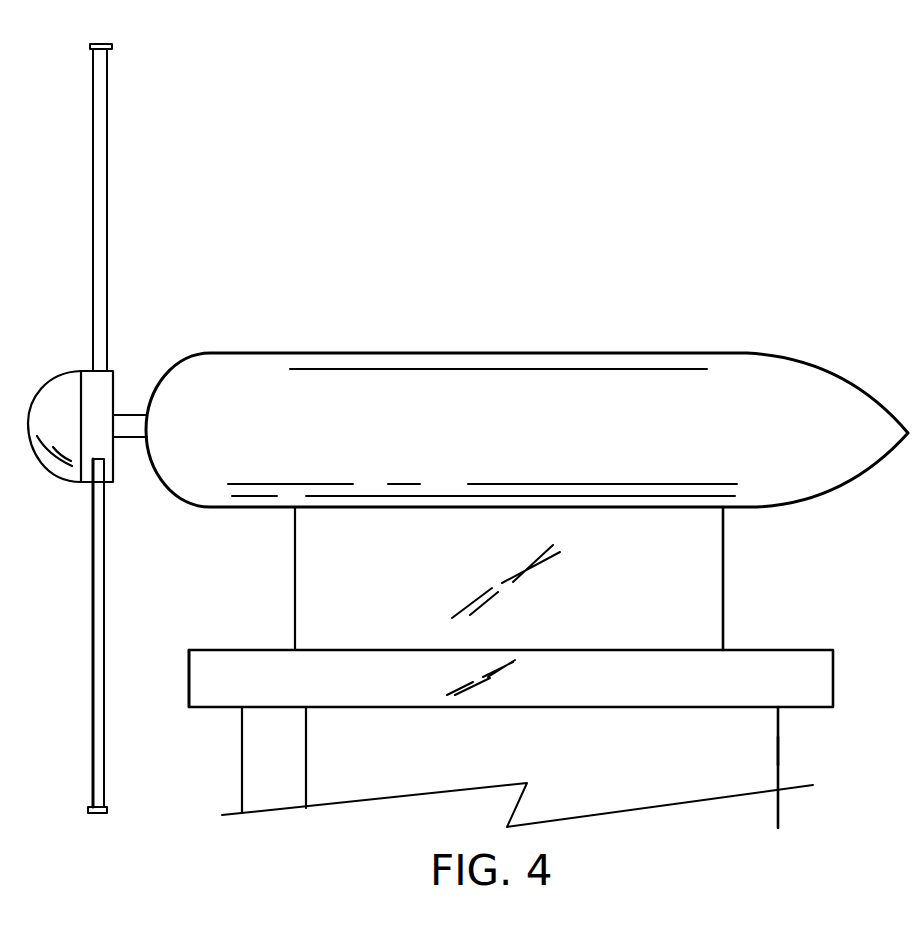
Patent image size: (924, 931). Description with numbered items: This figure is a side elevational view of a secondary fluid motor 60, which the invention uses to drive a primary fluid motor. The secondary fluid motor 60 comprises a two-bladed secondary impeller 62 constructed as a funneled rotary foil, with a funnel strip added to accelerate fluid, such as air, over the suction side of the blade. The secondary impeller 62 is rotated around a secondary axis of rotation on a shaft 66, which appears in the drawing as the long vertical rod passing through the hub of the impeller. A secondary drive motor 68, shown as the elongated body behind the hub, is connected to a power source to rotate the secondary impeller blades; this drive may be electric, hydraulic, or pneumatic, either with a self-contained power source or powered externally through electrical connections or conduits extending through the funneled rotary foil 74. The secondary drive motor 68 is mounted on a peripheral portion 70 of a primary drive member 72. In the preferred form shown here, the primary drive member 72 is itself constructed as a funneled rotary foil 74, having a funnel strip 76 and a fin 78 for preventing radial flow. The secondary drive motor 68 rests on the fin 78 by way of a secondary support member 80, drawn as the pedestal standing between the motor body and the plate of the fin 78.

The secondary fluid motor 60 is at (410, 298).
The secondary impeller 62 is at (107, 219).
The shaft 66 is at (132, 412).
The secondary drive motor 68 is at (572, 355).
The peripheral portion 70 is at (802, 642).
The primary drive member 72 is at (790, 764).
The funneled rotary foil 74 is at (778, 737).
The funnel strip 76 is at (242, 762).
The fin 78 is at (189, 673).
The secondary support member 80 is at (723, 563).